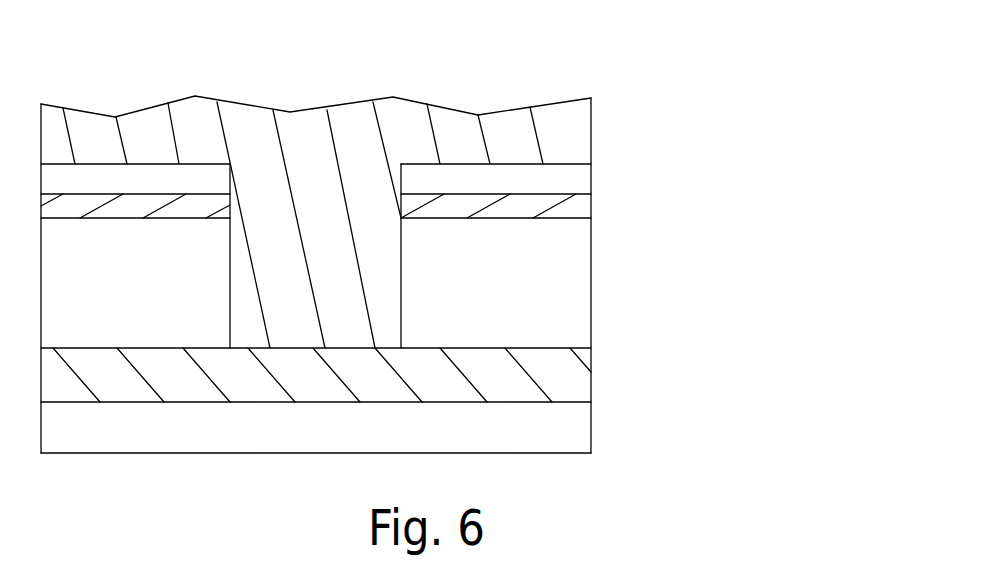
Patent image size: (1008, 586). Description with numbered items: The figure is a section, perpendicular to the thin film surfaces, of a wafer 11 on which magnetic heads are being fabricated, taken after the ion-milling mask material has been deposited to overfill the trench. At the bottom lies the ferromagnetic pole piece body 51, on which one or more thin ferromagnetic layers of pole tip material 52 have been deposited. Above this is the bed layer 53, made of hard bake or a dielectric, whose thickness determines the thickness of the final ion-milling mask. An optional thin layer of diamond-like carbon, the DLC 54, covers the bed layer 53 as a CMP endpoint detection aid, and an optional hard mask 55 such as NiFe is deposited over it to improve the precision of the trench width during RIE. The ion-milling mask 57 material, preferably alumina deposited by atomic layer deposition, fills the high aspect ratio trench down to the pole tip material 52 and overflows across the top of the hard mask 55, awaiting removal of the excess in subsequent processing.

The wafer 11 is at (612, 113).
The ion-milling mask 57 is at (244, 93).
The hard mask material 55 is at (580, 180).
The diamond-like carbon (DLC) layer 54 is at (580, 208).
The bed layer 53 is at (570, 283).
The pole tip material 52 is at (575, 382).
The pole piece body 51 is at (577, 432).